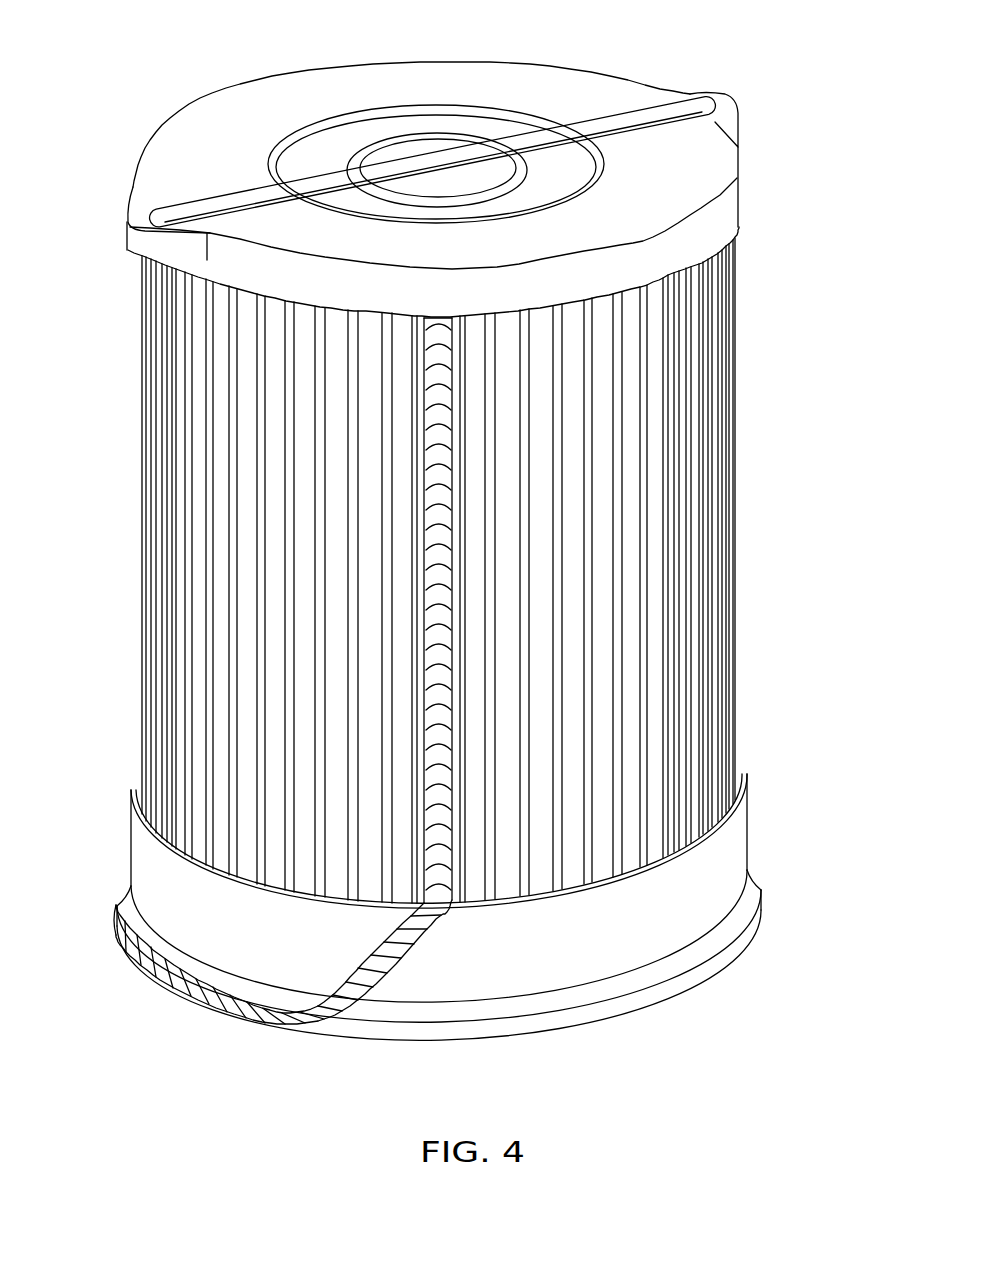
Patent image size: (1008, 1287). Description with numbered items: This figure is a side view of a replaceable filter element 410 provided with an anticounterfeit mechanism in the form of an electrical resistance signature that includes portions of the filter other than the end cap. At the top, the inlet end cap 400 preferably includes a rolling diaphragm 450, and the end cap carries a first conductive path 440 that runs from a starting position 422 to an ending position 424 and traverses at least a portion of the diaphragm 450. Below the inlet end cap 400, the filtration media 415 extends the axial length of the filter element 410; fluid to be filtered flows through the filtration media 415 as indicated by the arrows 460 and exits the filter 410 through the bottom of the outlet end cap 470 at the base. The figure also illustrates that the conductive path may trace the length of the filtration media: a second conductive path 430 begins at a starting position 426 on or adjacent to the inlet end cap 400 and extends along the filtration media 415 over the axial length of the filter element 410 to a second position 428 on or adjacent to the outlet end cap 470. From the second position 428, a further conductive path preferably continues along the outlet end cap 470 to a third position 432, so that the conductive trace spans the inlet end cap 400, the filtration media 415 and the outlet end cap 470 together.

The inlet end cap 400 is at (599, 88).
The replaceable filter element 410 is at (783, 398).
The filtration media 415 is at (730, 510).
The starting position 422 is at (168, 213).
The ending position 424 is at (699, 107).
The starting position 426 is at (438, 317).
The second position 428 is at (433, 918).
The second conductive path 430 is at (455, 737).
The third position 432 is at (117, 913).
The first conductive path 440 is at (230, 204).
The rolling diaphragm 450 is at (497, 128).
The arrows 460 is at (620, 603).
The outlet end cap 470 is at (735, 859).